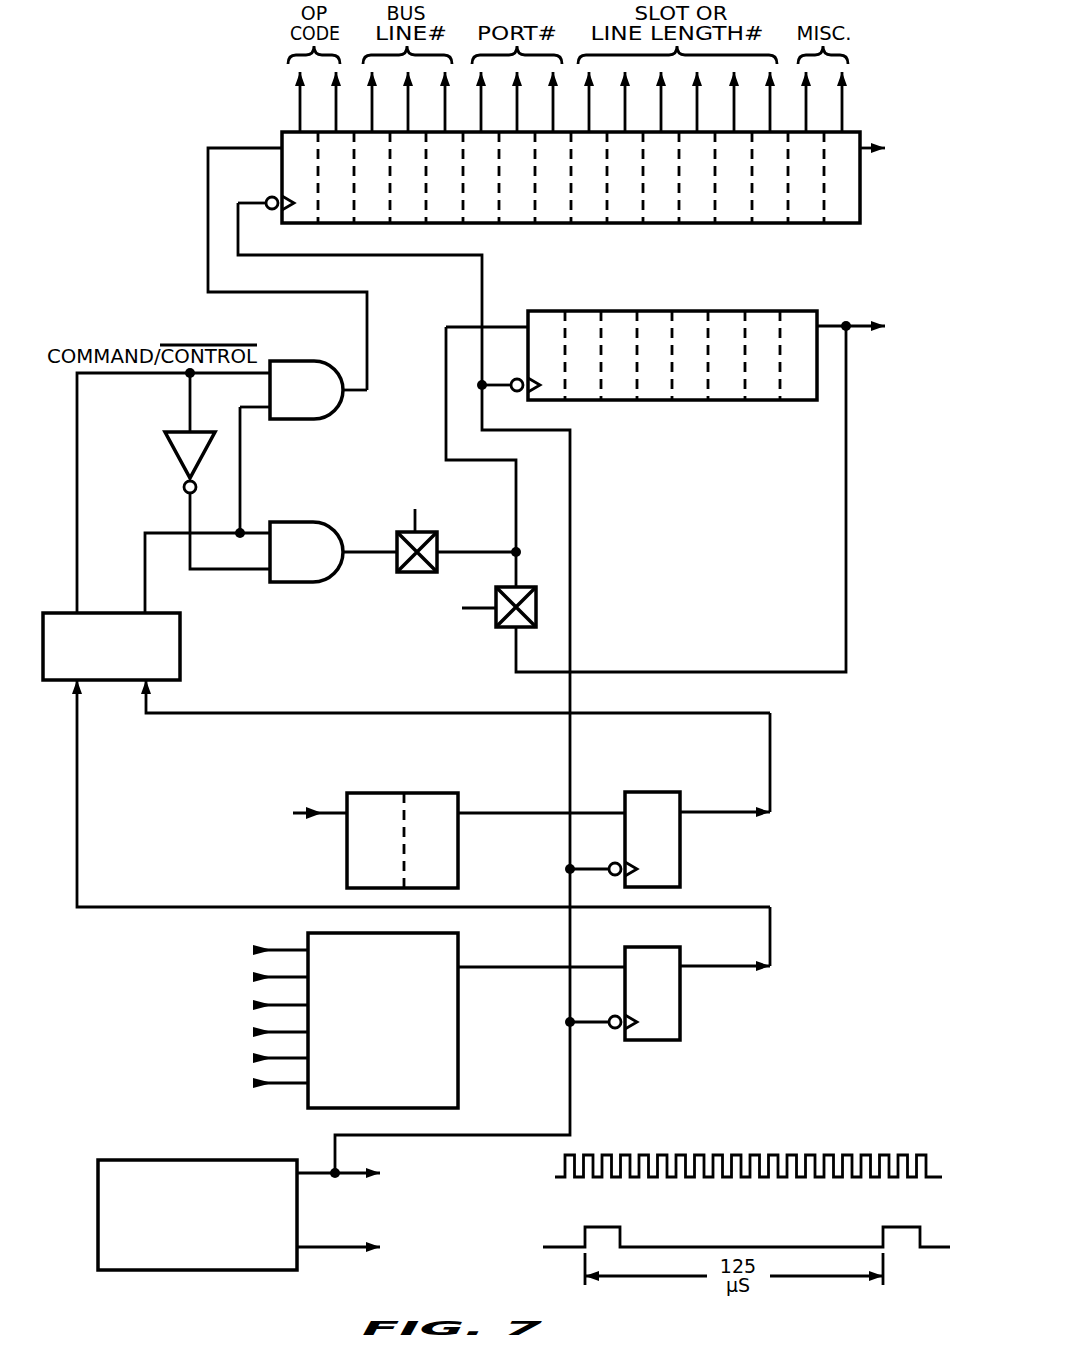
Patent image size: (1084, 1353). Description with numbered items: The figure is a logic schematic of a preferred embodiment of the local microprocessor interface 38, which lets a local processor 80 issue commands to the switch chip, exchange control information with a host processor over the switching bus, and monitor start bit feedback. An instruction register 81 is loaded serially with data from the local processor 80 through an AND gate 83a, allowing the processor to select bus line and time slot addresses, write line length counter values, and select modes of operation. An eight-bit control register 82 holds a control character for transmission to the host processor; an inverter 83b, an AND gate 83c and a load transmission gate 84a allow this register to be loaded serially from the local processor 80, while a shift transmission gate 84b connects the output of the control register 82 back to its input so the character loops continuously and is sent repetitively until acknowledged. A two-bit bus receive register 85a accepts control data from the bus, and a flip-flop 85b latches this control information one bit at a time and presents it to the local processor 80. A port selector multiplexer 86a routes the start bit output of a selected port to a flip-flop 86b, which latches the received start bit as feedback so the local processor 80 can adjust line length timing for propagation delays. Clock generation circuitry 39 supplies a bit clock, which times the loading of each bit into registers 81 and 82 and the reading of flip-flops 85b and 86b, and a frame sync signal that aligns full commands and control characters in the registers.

The local microprocessor interface 38 is at (866, 427).
The clock generation circuitry 39 is at (155, 1160).
The local processor 80 is at (180, 630).
The instruction register 81 is at (838, 210).
The 8-bit control register 82 is at (795, 311).
The AND gate 83a is at (302, 405).
The inverter 83b is at (165, 457).
The AND gate 83c is at (297, 538).
The transmission gate 84a is at (437, 536).
The transmission gate 84b is at (496, 627).
The 2-bit bus receive register 85a is at (420, 810).
The flip-flop 85b is at (680, 855).
The port selector multiplexer 86a is at (438, 1070).
The flip-flop 86b is at (680, 1015).